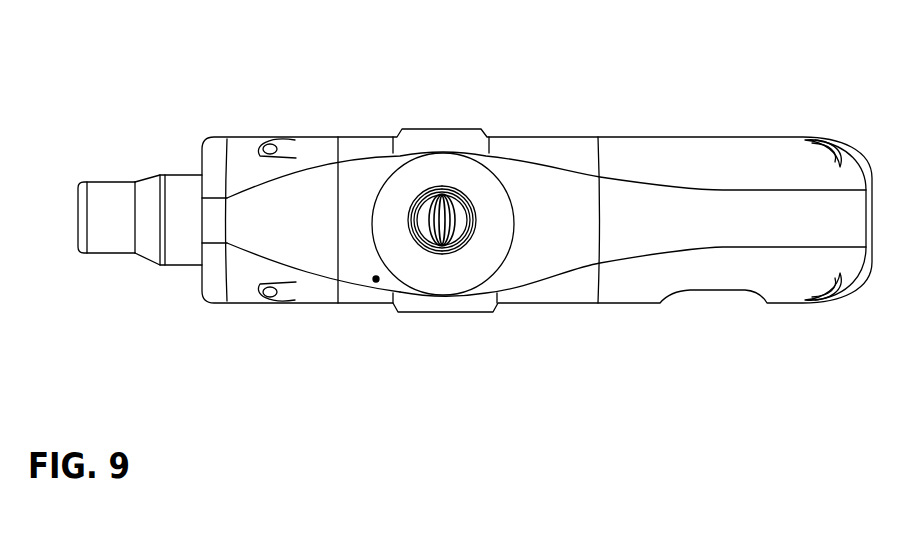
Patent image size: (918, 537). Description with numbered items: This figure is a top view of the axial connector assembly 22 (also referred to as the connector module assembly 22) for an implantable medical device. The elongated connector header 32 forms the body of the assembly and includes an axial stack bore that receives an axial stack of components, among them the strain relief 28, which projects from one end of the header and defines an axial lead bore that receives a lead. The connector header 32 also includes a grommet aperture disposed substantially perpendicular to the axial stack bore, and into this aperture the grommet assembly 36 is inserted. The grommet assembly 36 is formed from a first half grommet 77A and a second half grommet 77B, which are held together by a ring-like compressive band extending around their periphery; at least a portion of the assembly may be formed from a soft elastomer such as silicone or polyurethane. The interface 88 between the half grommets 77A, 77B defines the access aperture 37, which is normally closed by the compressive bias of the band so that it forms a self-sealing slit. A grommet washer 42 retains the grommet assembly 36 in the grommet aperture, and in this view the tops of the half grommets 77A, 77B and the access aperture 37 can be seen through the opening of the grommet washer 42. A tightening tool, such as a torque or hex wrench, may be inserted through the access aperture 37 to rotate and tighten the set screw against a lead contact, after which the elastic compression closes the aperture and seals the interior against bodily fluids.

The axial connector assembly 22 is at (645, 58).
The strain relief 28 is at (103, 181).
The connector header 32 is at (772, 137).
The grommet assembly 36 is at (450, 276).
The access aperture 37 is at (446, 215).
The grommet washer 42 is at (377, 277).
The first half grommet 77A is at (422, 232).
The second half grommet 77B is at (462, 232).
The interface 88 is at (436, 205).